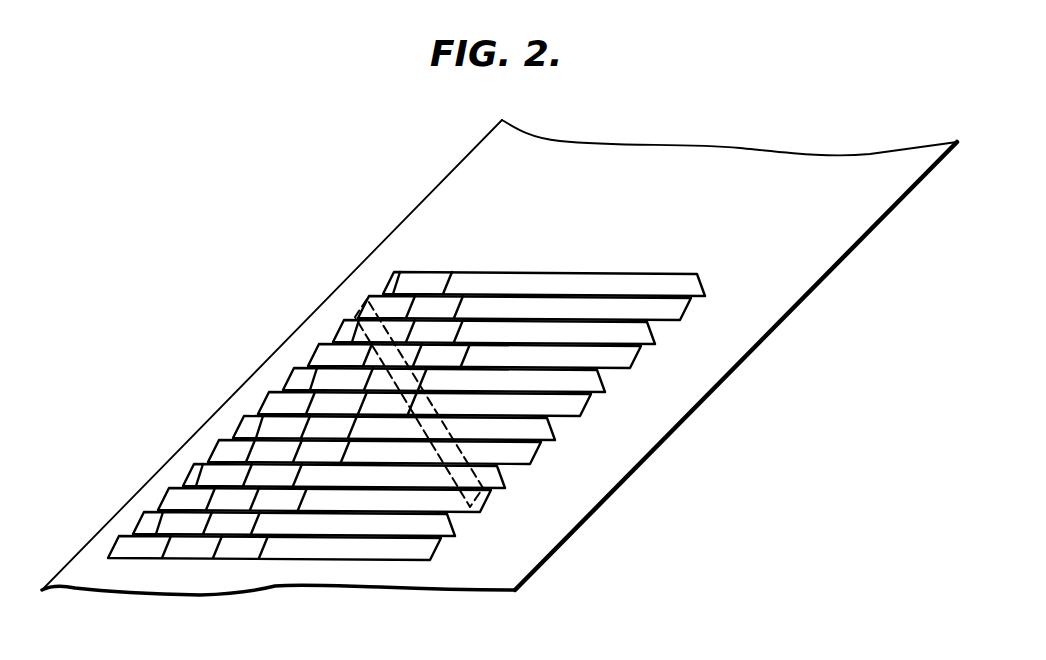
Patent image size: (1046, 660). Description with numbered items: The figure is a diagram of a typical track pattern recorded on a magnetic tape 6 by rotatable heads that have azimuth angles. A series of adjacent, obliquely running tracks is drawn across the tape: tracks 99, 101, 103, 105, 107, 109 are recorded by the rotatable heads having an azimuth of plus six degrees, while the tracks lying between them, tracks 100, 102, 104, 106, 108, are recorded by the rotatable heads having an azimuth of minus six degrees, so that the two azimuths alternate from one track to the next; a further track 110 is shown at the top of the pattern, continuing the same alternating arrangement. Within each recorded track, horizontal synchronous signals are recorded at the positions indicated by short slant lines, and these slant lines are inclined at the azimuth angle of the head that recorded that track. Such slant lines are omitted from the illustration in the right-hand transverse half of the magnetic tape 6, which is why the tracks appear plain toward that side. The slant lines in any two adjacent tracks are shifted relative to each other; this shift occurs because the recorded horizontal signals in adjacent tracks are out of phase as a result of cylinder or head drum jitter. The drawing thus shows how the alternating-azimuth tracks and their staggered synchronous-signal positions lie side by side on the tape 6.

The magnetic tape 6 is at (566, 153).
The track 99 is at (431, 551).
The track 100 is at (458, 527).
The track 101 is at (482, 510).
The track 102 is at (510, 478).
The track 103 is at (525, 455).
The track 104 is at (552, 432).
The track 105 is at (570, 403).
The track 106 is at (600, 385).
The track 107 is at (630, 358).
The track 108 is at (650, 335).
The track 109 is at (675, 310).
The strip 110 is at (702, 283).